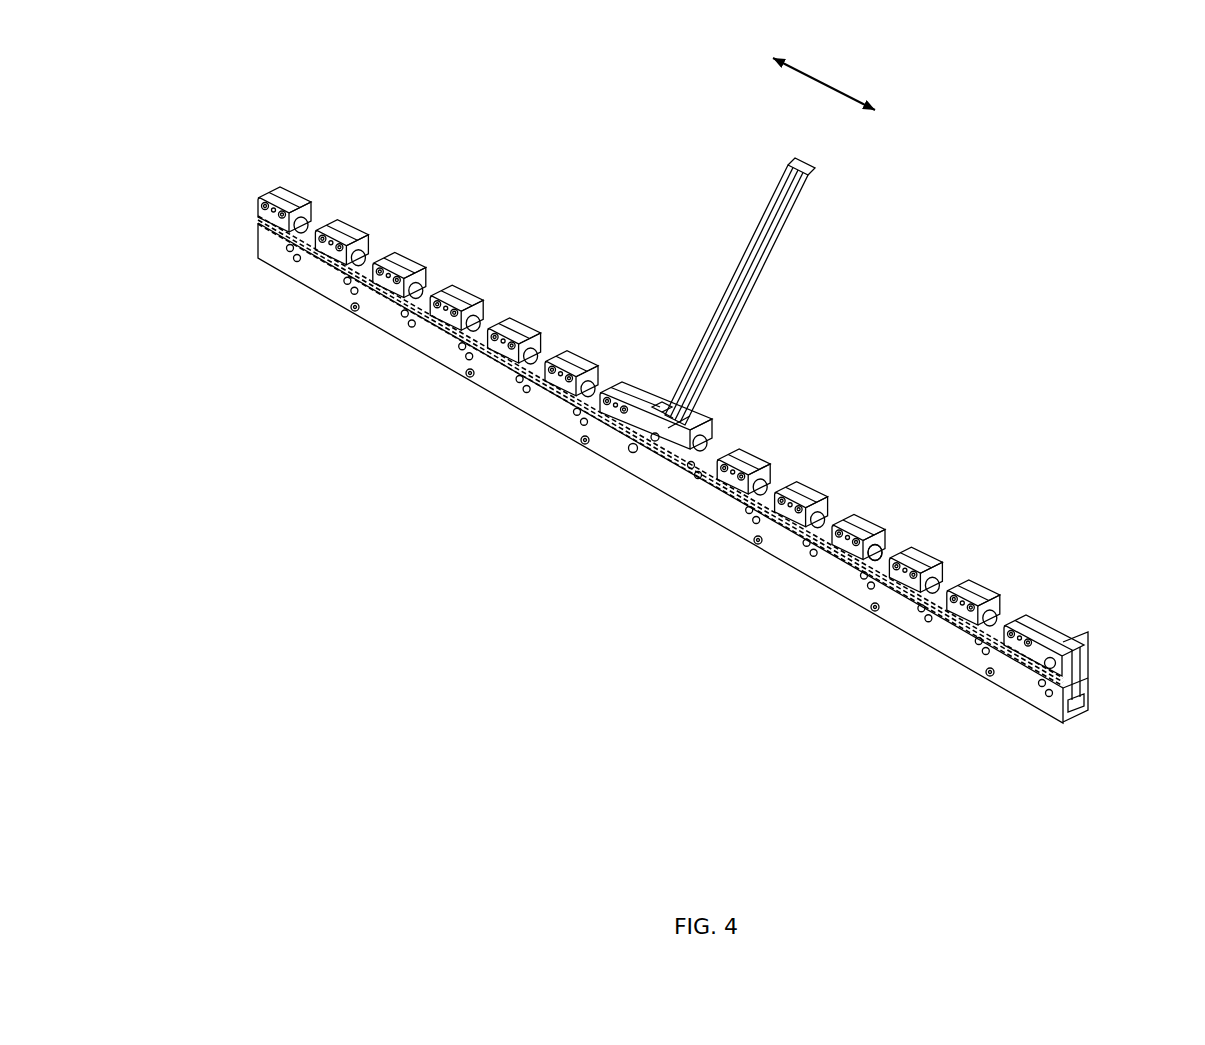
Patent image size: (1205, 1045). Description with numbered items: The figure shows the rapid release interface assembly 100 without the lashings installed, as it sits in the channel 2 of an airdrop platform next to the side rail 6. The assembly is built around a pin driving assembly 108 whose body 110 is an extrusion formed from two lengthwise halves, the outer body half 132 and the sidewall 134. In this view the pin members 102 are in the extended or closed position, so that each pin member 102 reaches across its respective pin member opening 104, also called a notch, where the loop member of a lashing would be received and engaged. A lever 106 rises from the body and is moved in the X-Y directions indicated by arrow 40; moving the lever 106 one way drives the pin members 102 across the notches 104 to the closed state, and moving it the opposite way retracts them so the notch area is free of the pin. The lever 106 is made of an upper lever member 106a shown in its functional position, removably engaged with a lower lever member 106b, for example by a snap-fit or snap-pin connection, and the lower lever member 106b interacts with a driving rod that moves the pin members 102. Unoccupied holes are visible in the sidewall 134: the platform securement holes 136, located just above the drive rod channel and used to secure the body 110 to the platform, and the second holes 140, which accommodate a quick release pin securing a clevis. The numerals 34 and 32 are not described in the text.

The rapid release interface assembly 100 is at (532, 138).
The channel 2 is at (1090, 722).
The base plate 34 is at (1050, 708).
The pin driving assembly 108 is at (247, 212).
The platform securement holes 136 is at (633, 458).
The body 110 is at (278, 174).
The outer body half 132 is at (268, 193).
The sidewall 134 is at (302, 186).
The second hole 140 is at (503, 350).
The lever 106 is at (762, 270).
The upper lever member 106a is at (790, 183).
The lower lever member 106b is at (662, 418).
The pin member 102 is at (855, 547).
The pin member opening 104 is at (905, 536).
The end plate 32 is at (1093, 690).
The side rail 6 is at (1078, 680).
The arrow 40 is at (824, 83).